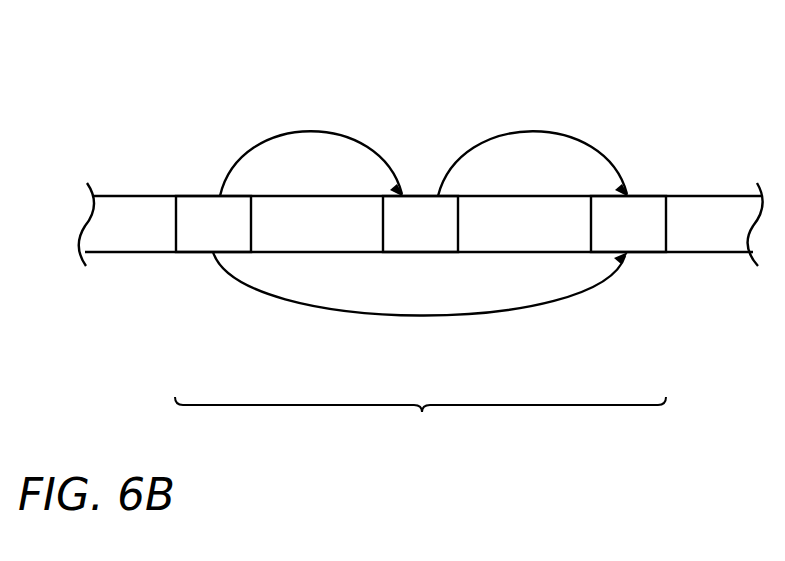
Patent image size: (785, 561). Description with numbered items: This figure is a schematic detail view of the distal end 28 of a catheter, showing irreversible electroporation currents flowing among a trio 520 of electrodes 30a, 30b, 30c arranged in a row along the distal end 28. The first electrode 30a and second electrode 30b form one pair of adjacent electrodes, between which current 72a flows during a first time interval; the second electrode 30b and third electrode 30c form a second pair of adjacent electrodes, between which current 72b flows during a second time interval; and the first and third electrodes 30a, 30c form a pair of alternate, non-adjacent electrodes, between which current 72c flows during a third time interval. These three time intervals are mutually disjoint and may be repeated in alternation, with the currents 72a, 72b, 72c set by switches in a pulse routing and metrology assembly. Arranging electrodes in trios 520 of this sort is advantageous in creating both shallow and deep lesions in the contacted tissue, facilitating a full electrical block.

The distal end 28 is at (116, 77).
The first electrode 30a is at (213, 224).
The second electrode 30b is at (420, 224).
The third electrode 30c is at (628, 224).
The IRE current 72a is at (296, 134).
The IRE current 72b is at (506, 134).
The IRE current 72c is at (495, 313).
The trio of electrodes 520 is at (420, 421).